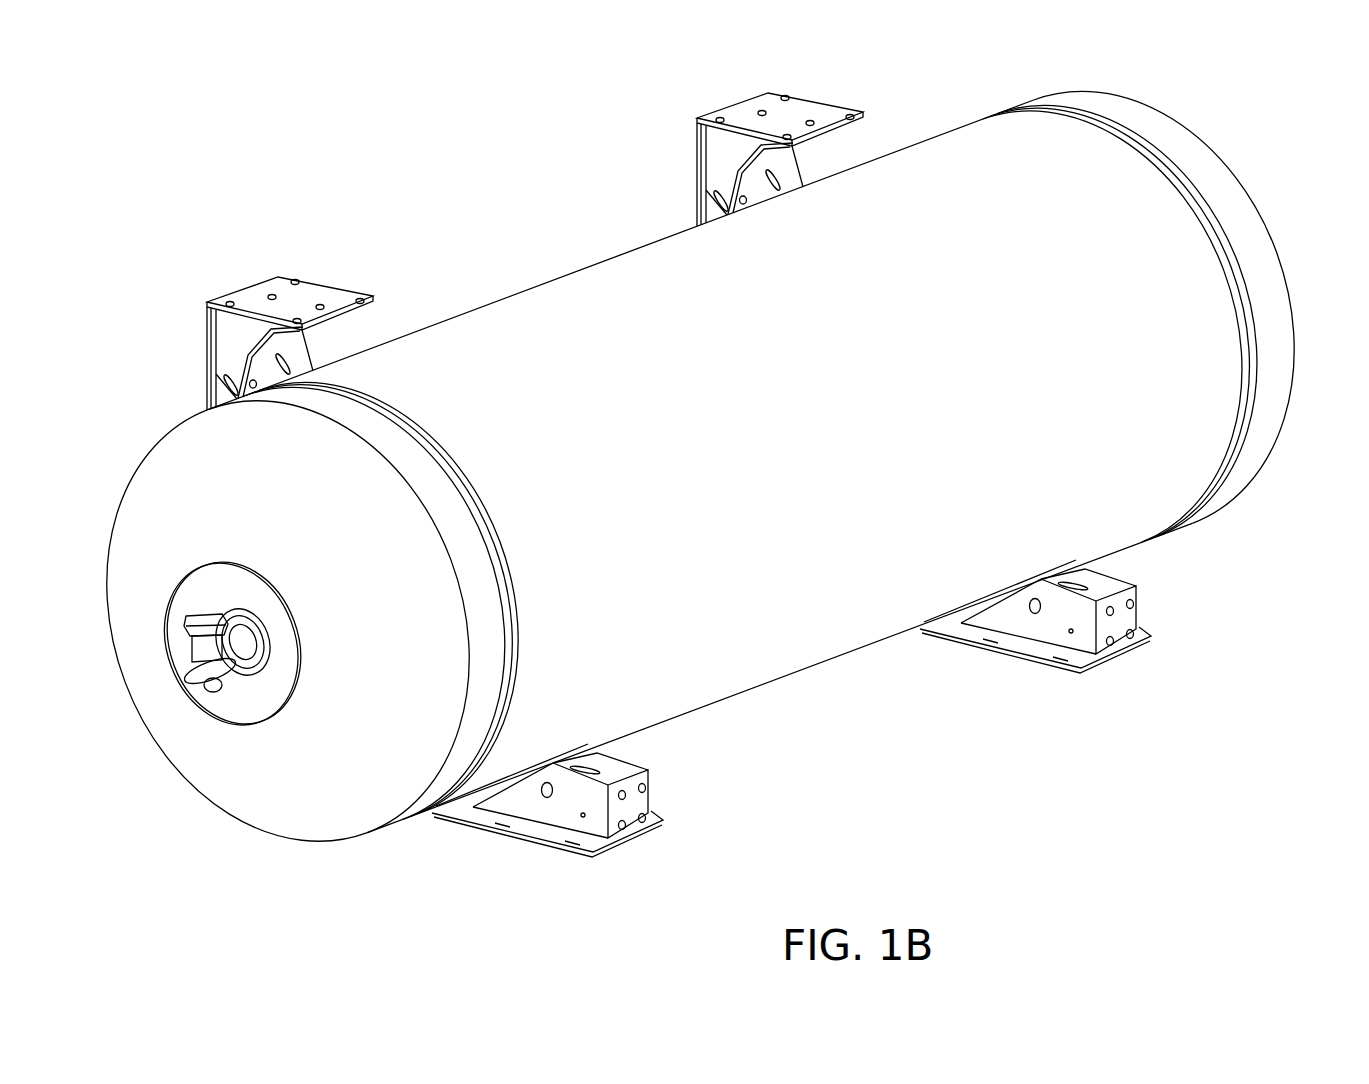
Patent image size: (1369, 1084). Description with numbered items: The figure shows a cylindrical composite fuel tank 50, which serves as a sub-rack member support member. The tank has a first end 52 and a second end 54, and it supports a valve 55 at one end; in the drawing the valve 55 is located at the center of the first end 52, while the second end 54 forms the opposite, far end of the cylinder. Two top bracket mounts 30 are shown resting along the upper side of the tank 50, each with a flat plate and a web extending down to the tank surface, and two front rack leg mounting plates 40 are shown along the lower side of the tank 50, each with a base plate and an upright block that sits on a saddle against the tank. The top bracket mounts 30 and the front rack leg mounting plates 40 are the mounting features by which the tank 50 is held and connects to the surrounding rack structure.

The top bracket mount 30 is at (800, 115).
The front rack leg mounting plate 40 is at (650, 792).
The cylindrical composite fuel tank 50 is at (800, 467).
The first end 52 is at (413, 642).
The second end 54 is at (1158, 134).
The valve 55 is at (202, 625).